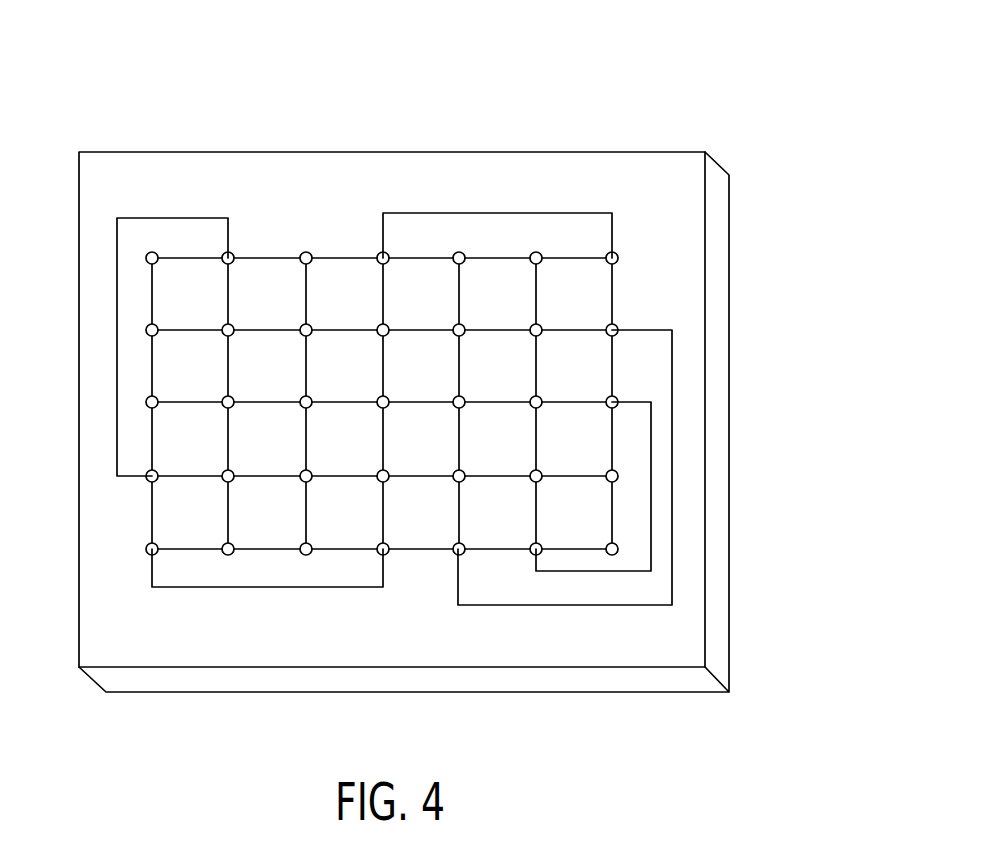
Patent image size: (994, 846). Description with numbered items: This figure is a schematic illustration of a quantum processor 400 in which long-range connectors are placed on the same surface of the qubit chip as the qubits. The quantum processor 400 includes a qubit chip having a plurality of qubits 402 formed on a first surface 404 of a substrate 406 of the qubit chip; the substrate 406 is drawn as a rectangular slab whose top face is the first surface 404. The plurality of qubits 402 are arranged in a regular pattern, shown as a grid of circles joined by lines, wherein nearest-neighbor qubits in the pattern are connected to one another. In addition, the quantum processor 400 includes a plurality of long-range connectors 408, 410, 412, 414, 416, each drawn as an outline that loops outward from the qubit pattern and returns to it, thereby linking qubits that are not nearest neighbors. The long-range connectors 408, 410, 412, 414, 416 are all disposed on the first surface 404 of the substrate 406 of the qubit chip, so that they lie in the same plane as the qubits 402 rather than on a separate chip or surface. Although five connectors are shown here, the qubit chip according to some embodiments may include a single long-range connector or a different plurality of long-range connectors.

The quantum processor 400 is at (778, 89).
The plurality of qubits 402 is at (252, 163).
The first surface 404 is at (669, 290).
The substrate 406 is at (712, 672).
The long-range connector 408 is at (497, 213).
The long-range connector 410 is at (651, 457).
The long-range connector 412 is at (584, 605).
The long-range connector 414 is at (253, 587).
The long-range connector 416 is at (117, 412).